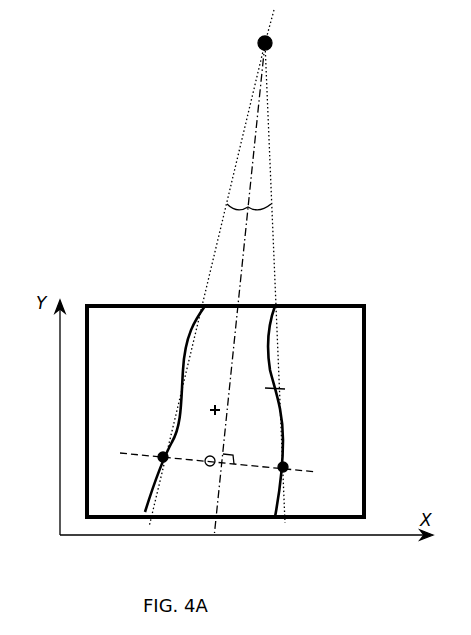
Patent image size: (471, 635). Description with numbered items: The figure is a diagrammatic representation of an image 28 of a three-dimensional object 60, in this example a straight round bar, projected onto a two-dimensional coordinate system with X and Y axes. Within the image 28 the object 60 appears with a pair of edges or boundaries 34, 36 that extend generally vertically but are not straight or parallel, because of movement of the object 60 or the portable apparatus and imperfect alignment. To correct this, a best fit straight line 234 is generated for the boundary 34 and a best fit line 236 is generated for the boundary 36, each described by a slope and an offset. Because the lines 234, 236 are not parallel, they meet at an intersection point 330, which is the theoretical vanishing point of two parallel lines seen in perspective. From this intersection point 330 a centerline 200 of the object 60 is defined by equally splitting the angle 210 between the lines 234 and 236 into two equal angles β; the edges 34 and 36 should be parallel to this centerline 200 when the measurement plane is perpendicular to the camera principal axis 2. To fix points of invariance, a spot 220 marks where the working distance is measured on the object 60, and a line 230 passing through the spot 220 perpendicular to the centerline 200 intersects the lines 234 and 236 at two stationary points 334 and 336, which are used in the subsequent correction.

The camera principal axis 2 is at (212, 409).
The image 28 is at (365, 357).
The boundary 34 is at (178, 418).
The boundary 36 is at (277, 362).
The object 60 is at (285, 389).
The centerline 200 is at (252, 170).
The angle 210 is at (233, 204).
The spot 220 is at (207, 465).
The line 230 is at (246, 465).
The best fit straight line 234 is at (219, 236).
The best fit line 236 is at (276, 256).
The intersection point 330 is at (272, 43).
The stationary point 334 is at (158, 460).
The stationary point 336 is at (288, 463).